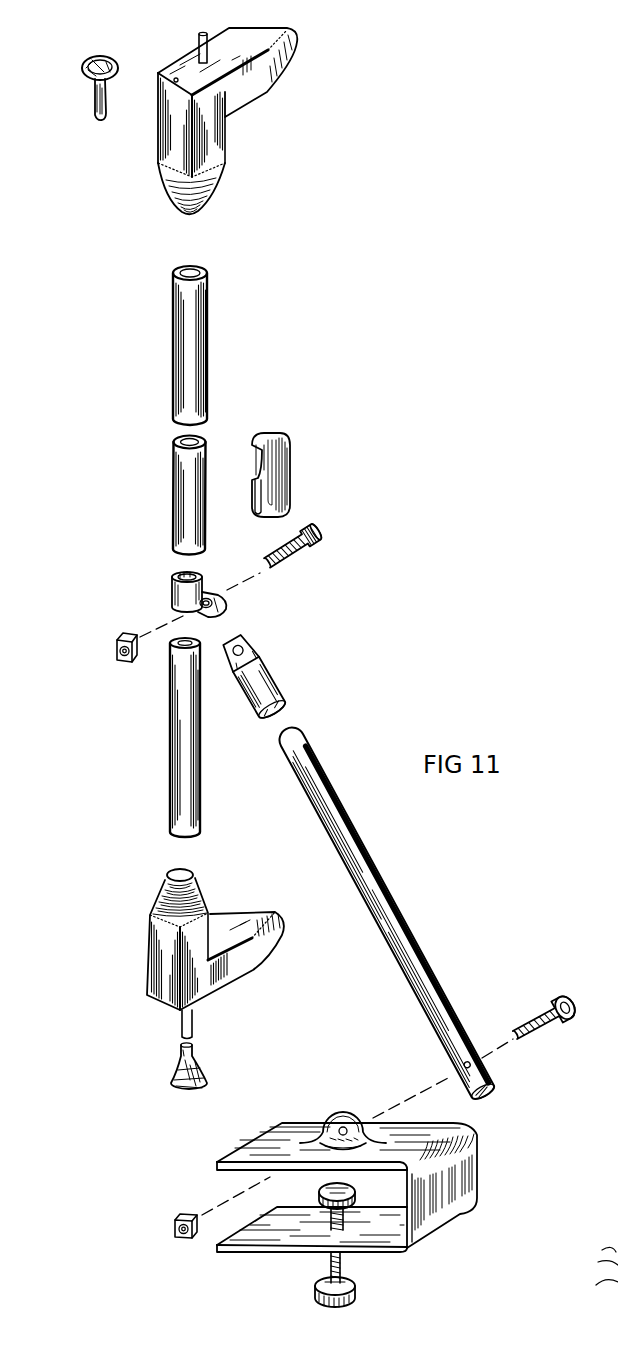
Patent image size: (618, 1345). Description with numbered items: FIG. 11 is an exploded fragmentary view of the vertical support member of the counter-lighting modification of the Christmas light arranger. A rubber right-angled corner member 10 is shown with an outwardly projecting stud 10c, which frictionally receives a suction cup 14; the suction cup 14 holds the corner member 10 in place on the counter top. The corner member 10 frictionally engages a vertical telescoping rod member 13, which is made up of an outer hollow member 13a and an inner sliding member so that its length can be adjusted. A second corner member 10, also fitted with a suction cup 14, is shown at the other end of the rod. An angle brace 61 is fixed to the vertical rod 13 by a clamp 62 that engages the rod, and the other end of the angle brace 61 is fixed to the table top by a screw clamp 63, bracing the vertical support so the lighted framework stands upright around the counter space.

The corner member 10 is at (207, 117).
The stud 10c is at (211, 43).
The telescoping rod member 13 is at (172, 787).
The outer hollow member 13a is at (192, 335).
The suction cup 14 is at (98, 57).
The angle brace 61 is at (348, 845).
The clamp 62 is at (226, 608).
The screw clamp 63 is at (453, 1175).